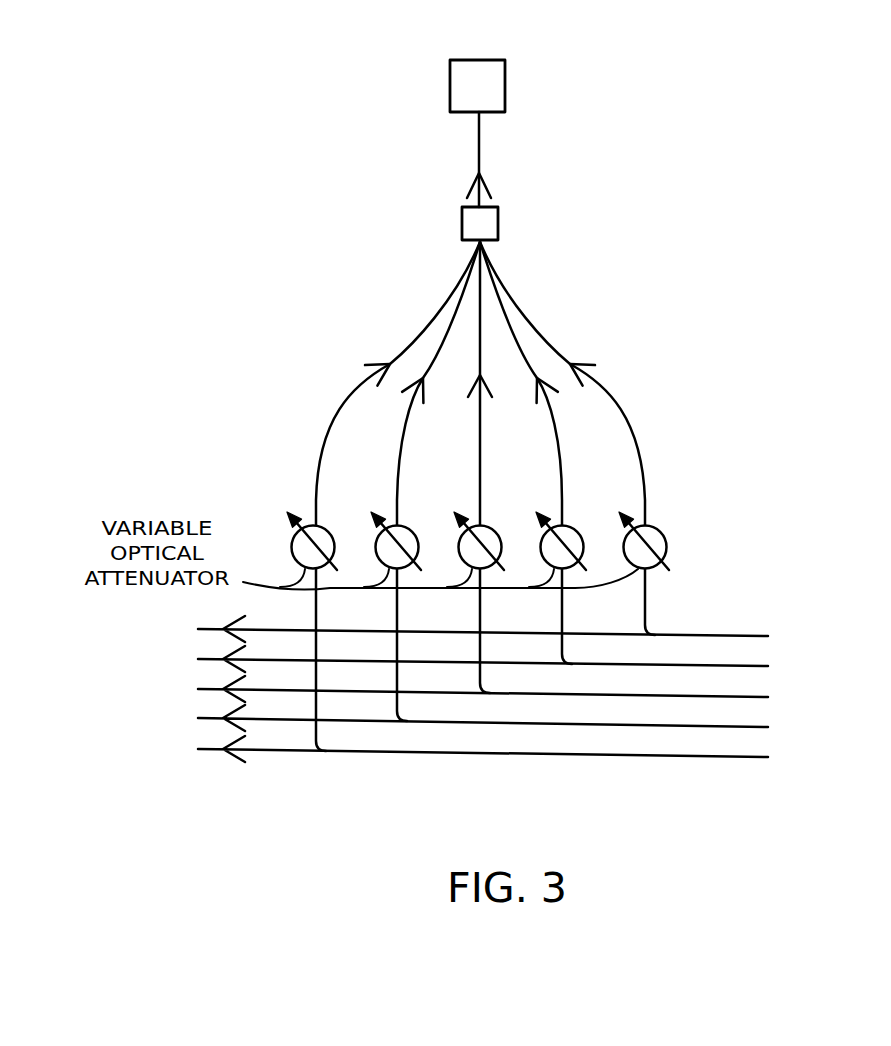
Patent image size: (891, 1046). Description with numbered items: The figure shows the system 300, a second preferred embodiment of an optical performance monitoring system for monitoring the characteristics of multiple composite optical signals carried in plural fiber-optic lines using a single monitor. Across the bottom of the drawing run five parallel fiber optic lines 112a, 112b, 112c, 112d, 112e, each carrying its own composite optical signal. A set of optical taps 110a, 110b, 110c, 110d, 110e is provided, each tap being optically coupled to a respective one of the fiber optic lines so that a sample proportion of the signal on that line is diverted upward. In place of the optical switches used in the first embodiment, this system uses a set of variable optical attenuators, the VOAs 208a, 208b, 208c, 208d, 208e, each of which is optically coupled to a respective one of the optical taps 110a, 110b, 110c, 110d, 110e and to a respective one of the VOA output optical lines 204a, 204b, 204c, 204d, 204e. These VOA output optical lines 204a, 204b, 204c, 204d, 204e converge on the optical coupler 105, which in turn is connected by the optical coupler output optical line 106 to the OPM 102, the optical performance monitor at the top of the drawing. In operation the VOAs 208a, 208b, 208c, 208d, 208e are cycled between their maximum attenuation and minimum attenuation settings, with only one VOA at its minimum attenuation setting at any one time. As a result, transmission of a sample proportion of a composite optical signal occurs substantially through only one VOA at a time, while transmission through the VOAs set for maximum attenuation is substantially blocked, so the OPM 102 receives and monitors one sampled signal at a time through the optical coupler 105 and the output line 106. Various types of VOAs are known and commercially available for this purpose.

The system 300 is at (233, 144).
The OPM 102 is at (505, 72).
The optical coupler 105 is at (499, 205).
The optical coupler output optical line 106 is at (480, 157).
The VOA output optical line 204a is at (317, 492).
The VOA output optical line 204b is at (397, 488).
The VOA output optical line 204c is at (480, 488).
The VOA output optical line 204d is at (561, 488).
The VOA output optical line 204e is at (644, 488).
The VOA 208a is at (329, 531).
The VOA 208b is at (413, 531).
The VOA 208c is at (496, 531).
The VOA 208d is at (578, 531).
The VOA 208e is at (661, 531).
The optical tap 110a is at (329, 752).
The optical tap 110b is at (410, 722).
The optical tap 110c is at (493, 694).
The optical tap 110d is at (575, 665).
The optical tap 110e is at (658, 636).
The fiber optic line 112a is at (752, 759).
The fiber optic line 112b is at (752, 729).
The fiber optic line 112c is at (752, 699).
The fiber optic line 112d is at (752, 669).
The fiber optic line 112e is at (758, 638).